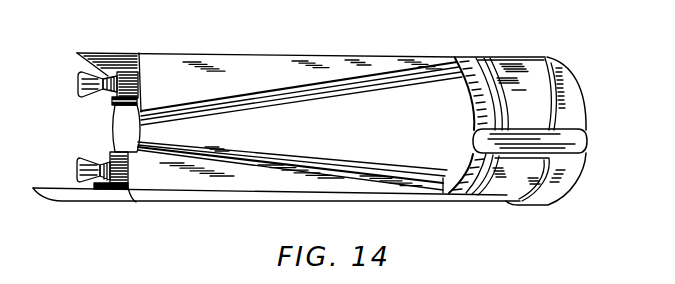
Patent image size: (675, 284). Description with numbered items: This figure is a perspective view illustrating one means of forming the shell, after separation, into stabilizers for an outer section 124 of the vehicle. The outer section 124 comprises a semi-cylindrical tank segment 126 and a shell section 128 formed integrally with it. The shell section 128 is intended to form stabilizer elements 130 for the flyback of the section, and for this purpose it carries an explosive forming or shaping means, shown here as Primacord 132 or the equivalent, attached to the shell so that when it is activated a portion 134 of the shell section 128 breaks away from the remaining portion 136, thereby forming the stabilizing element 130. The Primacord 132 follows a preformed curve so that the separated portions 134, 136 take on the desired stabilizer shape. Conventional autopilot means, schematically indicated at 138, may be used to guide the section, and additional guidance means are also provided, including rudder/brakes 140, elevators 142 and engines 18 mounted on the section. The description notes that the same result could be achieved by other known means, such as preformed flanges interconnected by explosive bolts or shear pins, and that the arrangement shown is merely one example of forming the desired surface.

The engines 18 is at (79, 83).
The outer section 124 is at (368, 138).
The semi-cylindrical tank segment 126 is at (198, 194).
The shell section 128 is at (482, 196).
The stabilizer elements 130 is at (572, 88).
The Primacord 132 is at (533, 60).
The portion of the shell section 134 is at (533, 118).
The portion of the shell section 136 is at (580, 126).
The autopilot means 138 is at (577, 146).
The rudder/brakes 140 is at (117, 64).
The elevators 142 is at (122, 136).